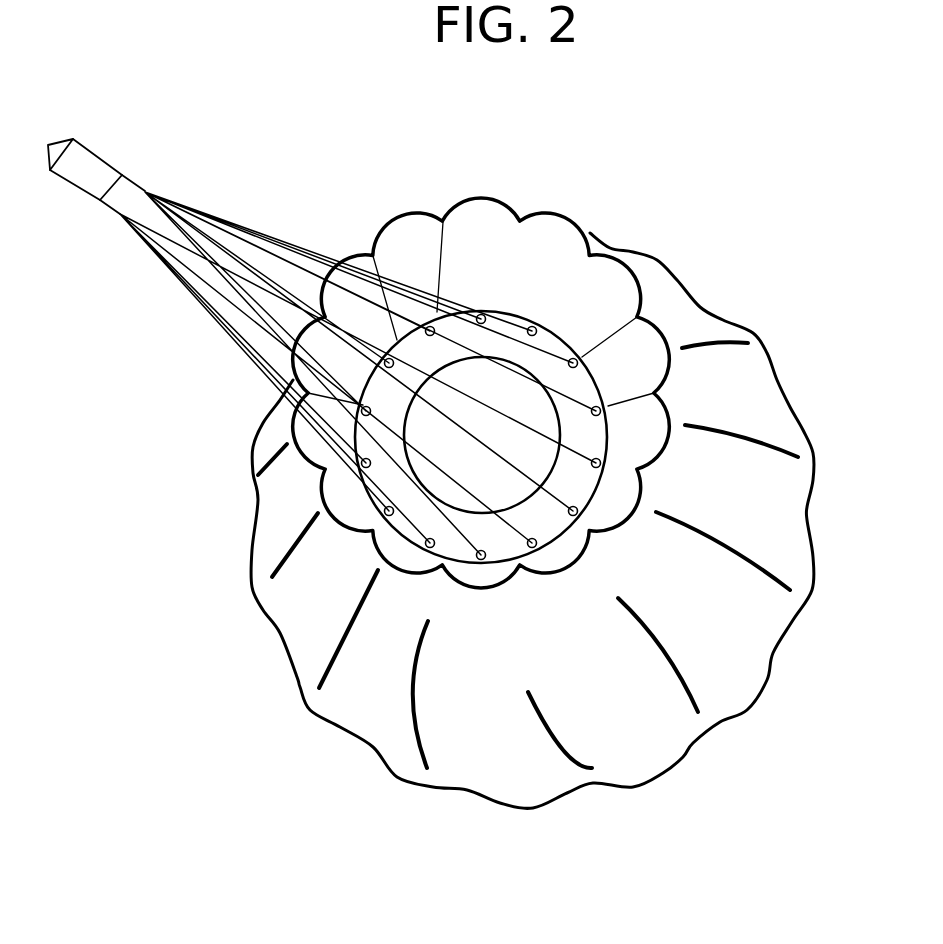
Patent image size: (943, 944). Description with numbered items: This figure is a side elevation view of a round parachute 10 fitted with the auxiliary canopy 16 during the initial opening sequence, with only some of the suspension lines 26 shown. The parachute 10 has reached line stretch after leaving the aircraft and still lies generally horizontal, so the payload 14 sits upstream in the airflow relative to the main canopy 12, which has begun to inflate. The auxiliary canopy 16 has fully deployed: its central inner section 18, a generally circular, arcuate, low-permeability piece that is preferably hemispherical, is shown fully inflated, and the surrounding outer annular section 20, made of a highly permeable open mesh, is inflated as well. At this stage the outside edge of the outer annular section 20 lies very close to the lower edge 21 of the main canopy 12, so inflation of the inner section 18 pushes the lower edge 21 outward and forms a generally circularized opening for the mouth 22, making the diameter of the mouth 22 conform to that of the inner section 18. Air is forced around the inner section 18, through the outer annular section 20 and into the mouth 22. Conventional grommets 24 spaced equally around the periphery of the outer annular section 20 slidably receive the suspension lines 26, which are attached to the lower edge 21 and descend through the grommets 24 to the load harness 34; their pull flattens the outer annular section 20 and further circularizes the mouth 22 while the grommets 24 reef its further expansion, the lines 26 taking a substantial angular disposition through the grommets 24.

The parachute 10 is at (213, 535).
The main canopy 12 is at (755, 603).
The payload 14 is at (85, 162).
The auxiliary canopy 16 is at (497, 566).
The central inner section 18 is at (502, 290).
The outer annular section 20 is at (593, 437).
The lower edge of the main canopy 21 is at (463, 403).
The mouth 22 is at (638, 375).
The grommets 24 is at (573, 516).
The suspension lines 26 is at (545, 320).
The load harness 34 is at (133, 177).